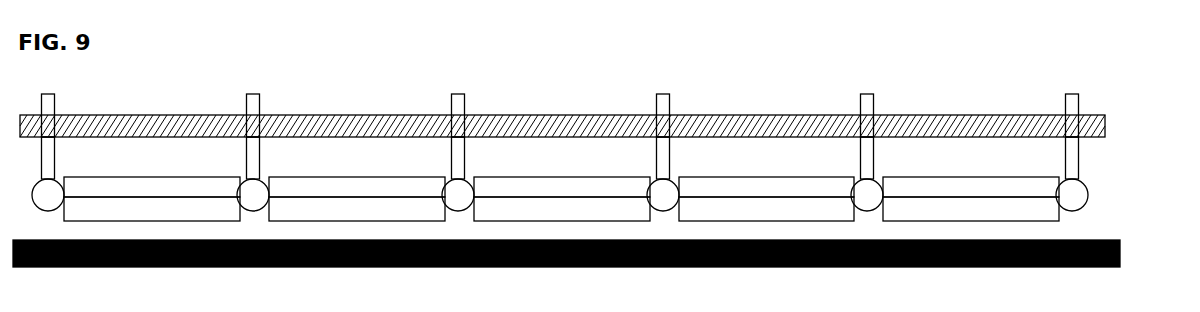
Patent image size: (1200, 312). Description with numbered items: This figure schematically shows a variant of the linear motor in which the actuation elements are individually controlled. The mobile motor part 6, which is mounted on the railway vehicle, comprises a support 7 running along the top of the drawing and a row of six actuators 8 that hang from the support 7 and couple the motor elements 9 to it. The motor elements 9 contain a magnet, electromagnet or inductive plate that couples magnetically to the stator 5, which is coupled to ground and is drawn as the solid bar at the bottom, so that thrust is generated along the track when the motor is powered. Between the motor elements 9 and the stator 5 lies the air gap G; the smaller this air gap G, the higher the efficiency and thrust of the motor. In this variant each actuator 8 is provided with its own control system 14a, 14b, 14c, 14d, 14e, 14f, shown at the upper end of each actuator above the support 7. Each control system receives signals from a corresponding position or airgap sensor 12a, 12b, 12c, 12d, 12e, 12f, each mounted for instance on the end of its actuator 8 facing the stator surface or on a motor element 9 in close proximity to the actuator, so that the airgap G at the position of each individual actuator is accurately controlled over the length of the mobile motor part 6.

The stator 5 is at (1017, 267).
The mobile motor part 6 is at (1020, 52).
The support 7 is at (583, 102).
The actuator 8 is at (45, 157).
The motor element 9 is at (810, 163).
The position or airgap sensor 12a is at (49, 213).
The position or airgap sensor 12b is at (254, 213).
The position or airgap sensor 12c is at (459, 213).
The position or airgap sensor 12d is at (664, 213).
The position or airgap sensor 12e is at (868, 213).
The position or airgap sensor 12f is at (1070, 216).
The control system 14a is at (48, 107).
The control system 14b is at (253, 104).
The control system 14c is at (462, 104).
The control system 14d is at (663, 100).
The control system 14e is at (868, 102).
The control system 14f is at (1073, 102).
The air gap G is at (1018, 230).